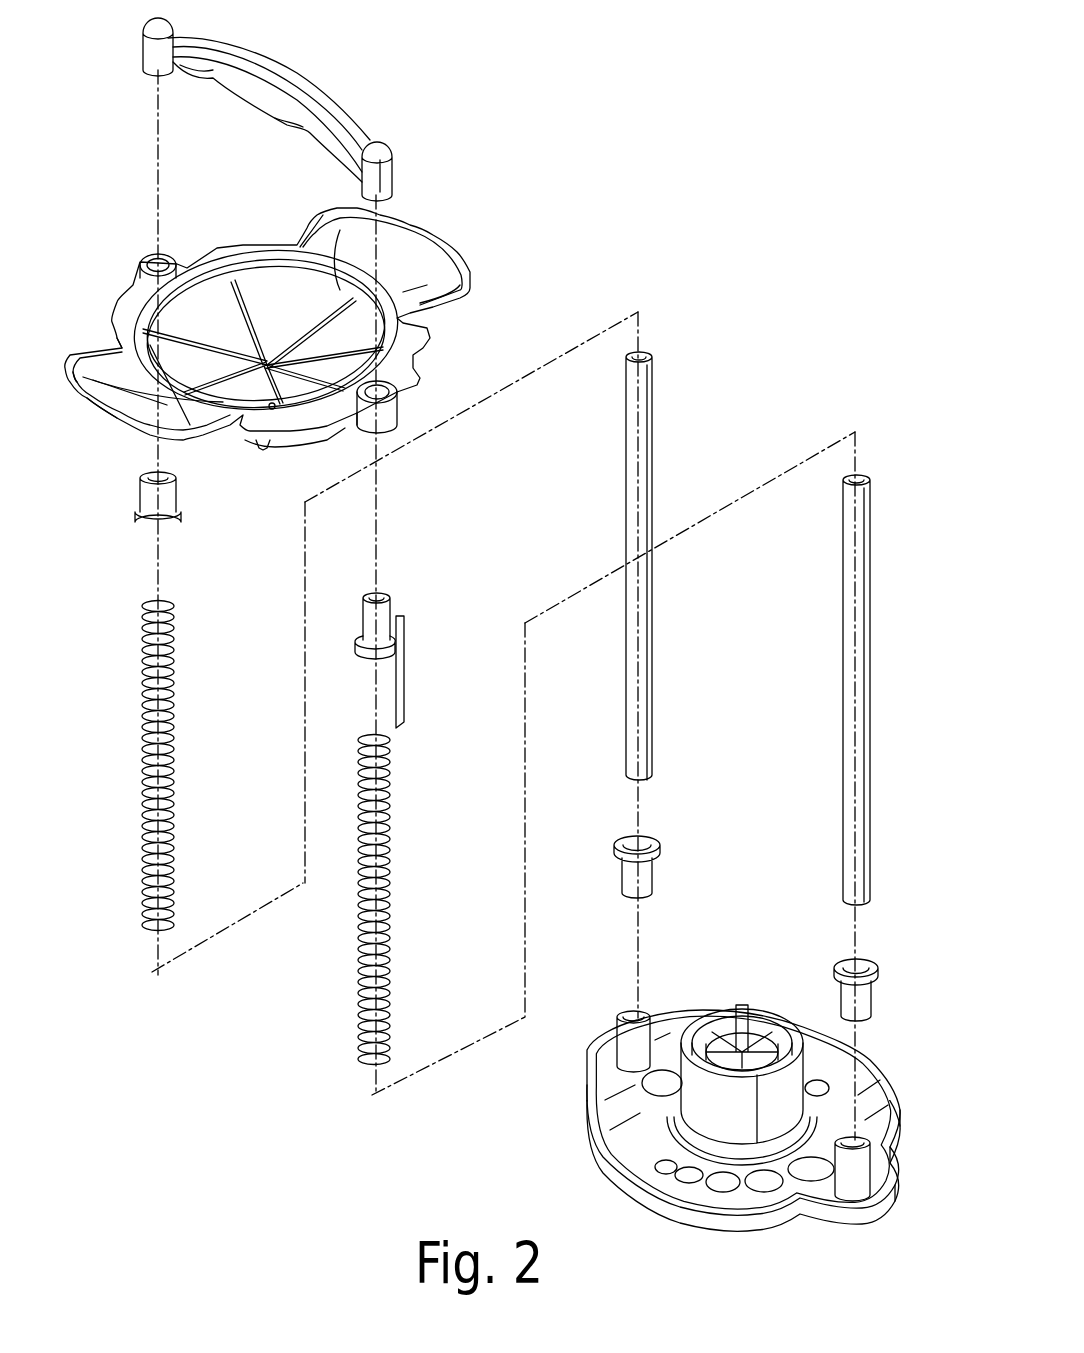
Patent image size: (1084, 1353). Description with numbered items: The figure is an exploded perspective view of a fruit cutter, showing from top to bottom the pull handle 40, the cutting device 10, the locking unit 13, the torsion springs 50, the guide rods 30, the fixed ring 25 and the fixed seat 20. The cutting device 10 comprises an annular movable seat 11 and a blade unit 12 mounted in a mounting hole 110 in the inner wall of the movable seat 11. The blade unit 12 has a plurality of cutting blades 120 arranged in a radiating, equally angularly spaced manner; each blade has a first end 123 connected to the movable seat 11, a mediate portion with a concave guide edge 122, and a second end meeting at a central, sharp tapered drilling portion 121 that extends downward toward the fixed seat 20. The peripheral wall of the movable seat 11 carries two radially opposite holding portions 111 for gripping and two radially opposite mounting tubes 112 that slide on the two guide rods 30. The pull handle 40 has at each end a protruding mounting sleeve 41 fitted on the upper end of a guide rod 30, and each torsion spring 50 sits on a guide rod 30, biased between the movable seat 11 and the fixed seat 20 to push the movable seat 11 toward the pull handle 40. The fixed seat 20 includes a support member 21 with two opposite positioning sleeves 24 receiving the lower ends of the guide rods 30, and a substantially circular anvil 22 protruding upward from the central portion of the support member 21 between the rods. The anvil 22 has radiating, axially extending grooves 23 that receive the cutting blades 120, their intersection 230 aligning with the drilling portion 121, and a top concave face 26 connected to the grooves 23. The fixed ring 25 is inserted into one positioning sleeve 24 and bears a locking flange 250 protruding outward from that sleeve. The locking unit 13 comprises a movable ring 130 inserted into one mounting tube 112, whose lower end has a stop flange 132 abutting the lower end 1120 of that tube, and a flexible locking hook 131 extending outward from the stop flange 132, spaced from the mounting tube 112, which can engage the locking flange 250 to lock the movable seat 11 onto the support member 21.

The cutting device 10 is at (275, 354).
The movable seat 11 is at (211, 256).
The mounting hole 110 is at (270, 285).
The holding portions 111 is at (418, 236).
The mounting tubes 112 is at (381, 431).
The lower end of mounting tube 1120 is at (367, 428).
The blade unit 12 is at (263, 344).
The cutting blades 120 is at (225, 324).
The drilling portion 121 is at (256, 446).
The concave guide edge 122 is at (130, 424).
The first end 123 is at (88, 421).
The locking unit 13 is at (392, 647).
The movable ring 130 is at (362, 616).
The locking hook 131 is at (402, 680).
The stop flange 132 is at (363, 655).
The fixed seat 20 is at (744, 1112).
The support member 21 is at (610, 1103).
The anvil 22 is at (742, 1112).
The grooves 23 is at (738, 1014).
The intersection 230 is at (730, 1022).
The positioning sleeves 24 is at (880, 1186).
The fixed ring 25 is at (880, 972).
The locking flange 250 is at (868, 961).
The concave face 26 is at (773, 1027).
The guide rods 30 is at (843, 748).
The pull handle 40 is at (263, 68).
The mounting sleeve 41 is at (392, 174).
The torsion springs 50 is at (393, 935).